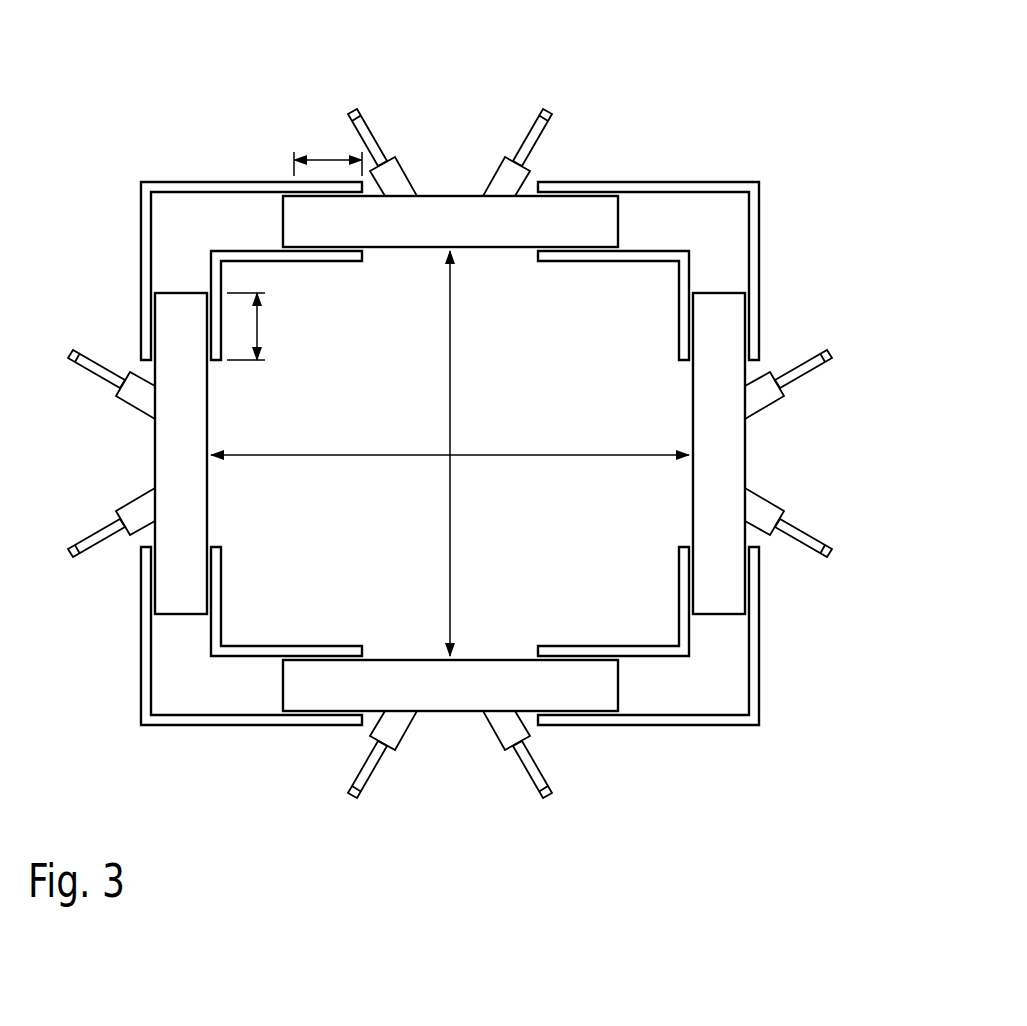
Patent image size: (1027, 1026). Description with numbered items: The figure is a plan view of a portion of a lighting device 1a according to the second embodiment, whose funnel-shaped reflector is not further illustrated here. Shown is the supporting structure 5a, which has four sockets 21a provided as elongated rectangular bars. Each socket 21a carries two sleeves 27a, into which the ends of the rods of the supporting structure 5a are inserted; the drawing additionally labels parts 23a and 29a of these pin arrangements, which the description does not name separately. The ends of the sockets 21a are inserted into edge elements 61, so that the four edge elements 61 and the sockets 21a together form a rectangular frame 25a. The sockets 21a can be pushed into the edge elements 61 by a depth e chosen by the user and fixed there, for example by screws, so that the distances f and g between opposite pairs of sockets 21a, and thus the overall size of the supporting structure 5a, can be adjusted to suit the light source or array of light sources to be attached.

The lighting device 1a is at (669, 103).
The supporting structure 5a is at (124, 635).
The socket 21a is at (607, 220).
The guide pin 23a is at (356, 125).
The rectangular frame 25a is at (225, 146).
The sleeve 27a is at (494, 175).
The pin holder 29a is at (386, 163).
The edge element 61 is at (158, 184).